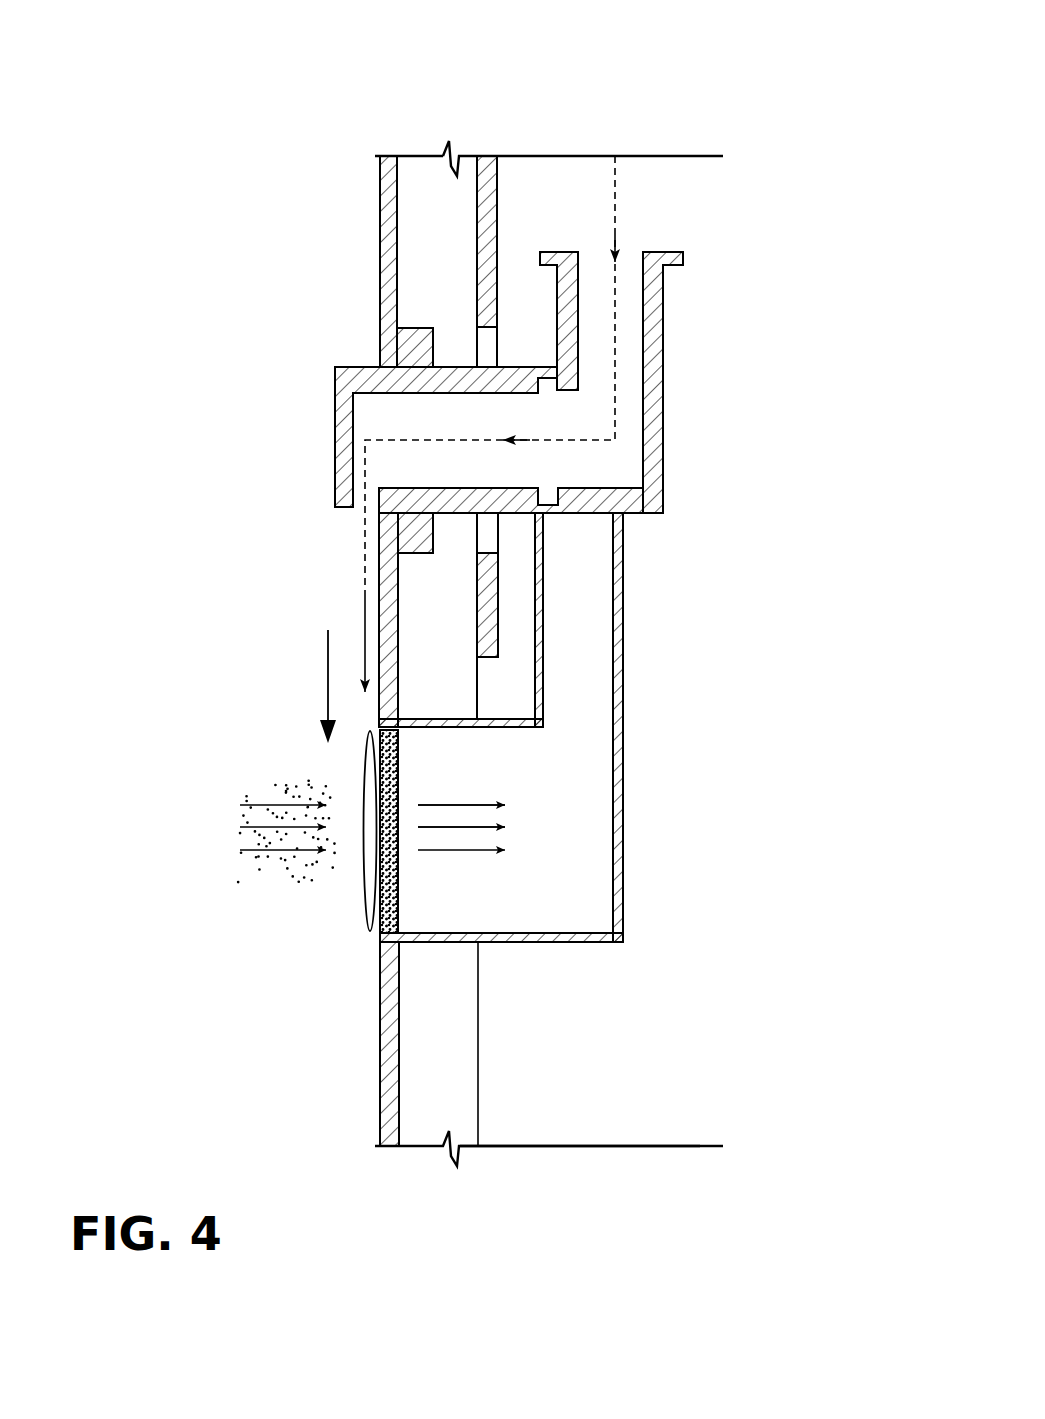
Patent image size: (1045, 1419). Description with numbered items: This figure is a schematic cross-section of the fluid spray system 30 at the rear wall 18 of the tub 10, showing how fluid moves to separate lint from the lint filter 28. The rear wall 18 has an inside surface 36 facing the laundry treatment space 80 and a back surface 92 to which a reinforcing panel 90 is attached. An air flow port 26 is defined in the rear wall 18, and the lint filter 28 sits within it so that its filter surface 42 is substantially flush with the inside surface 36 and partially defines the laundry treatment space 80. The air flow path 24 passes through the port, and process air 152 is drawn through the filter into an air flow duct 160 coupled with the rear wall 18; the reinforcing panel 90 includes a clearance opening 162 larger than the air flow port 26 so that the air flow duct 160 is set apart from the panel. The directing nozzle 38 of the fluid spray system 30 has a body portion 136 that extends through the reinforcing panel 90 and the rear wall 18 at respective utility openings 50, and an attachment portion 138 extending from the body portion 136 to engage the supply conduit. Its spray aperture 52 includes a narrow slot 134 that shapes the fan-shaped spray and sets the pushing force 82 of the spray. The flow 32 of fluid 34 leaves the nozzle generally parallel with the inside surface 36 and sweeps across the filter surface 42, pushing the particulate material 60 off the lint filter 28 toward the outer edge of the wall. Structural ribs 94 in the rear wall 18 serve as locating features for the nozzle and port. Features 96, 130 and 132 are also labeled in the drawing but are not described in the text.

The tub 10 is at (402, 1155).
The rear wall 18 is at (375, 168).
The air flow path 24 is at (584, 729).
The air flow port 26 is at (380, 933).
The lint filter 28 is at (396, 900).
The fluid spray system 30 is at (668, 397).
The flow 32 is at (363, 613).
The fluid 34 is at (365, 600).
The inside surface 36 is at (380, 1080).
The directing nozzle 38 is at (333, 387).
The filter surface 42 is at (382, 915).
The utility openings 50 is at (390, 513).
The spray aperture 52 is at (350, 507).
The particulate material 60 is at (367, 891).
The laundry treatment space 80 is at (129, 536).
The pushing force 82 is at (326, 690).
The reinforcing panel 90 is at (506, 170).
The back surface 92 is at (478, 1050).
The structural ribs 94 is at (453, 1095).
The upper opening 96 is at (461, 180).
The upper wedge top 130 is at (413, 328).
The upper wedge 132 is at (385, 366).
The narrow slot 134 is at (356, 512).
The body portion 136 is at (353, 367).
The attachment portion 138 is at (662, 347).
The process air 152 is at (465, 853).
The air flow duct 160 is at (624, 770).
The clearance opening 162 is at (485, 533).